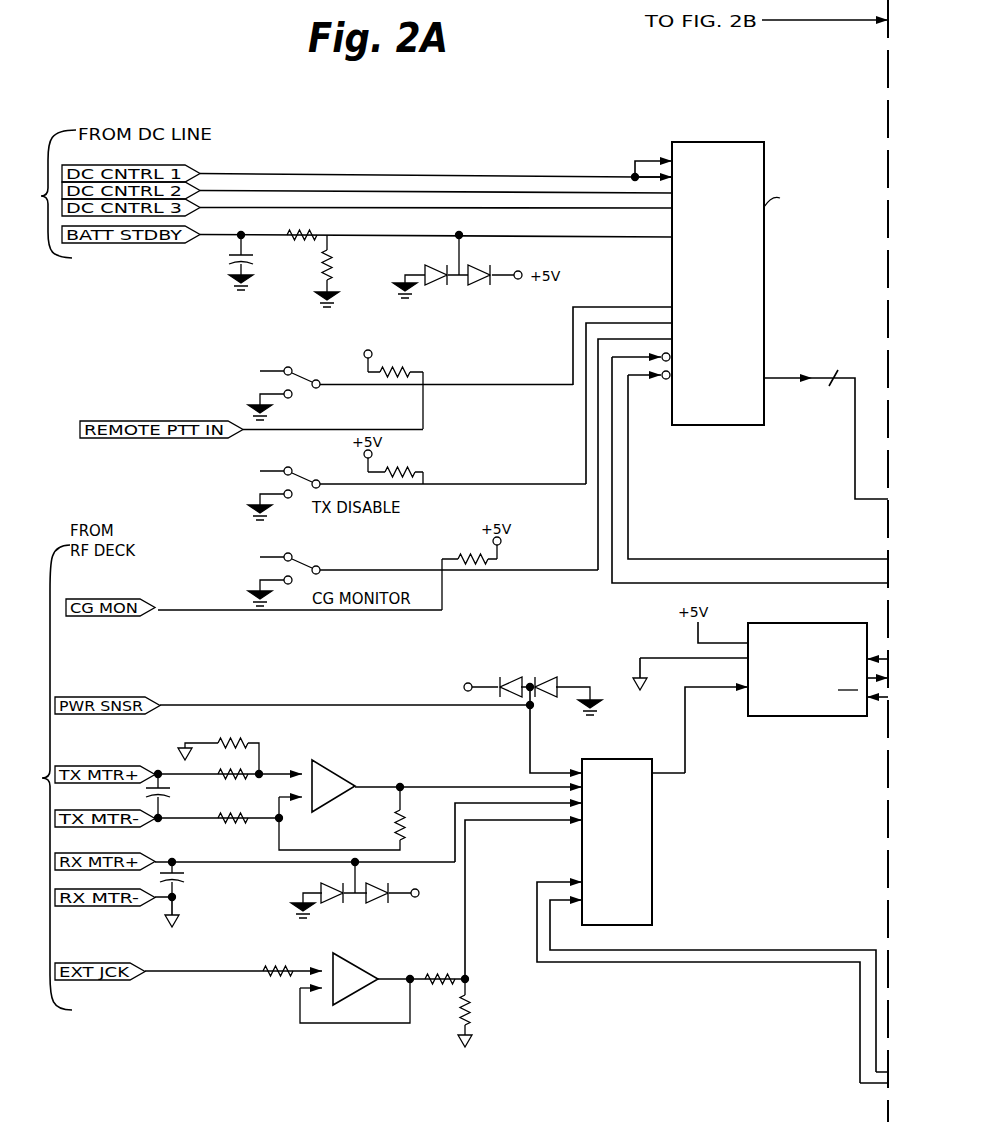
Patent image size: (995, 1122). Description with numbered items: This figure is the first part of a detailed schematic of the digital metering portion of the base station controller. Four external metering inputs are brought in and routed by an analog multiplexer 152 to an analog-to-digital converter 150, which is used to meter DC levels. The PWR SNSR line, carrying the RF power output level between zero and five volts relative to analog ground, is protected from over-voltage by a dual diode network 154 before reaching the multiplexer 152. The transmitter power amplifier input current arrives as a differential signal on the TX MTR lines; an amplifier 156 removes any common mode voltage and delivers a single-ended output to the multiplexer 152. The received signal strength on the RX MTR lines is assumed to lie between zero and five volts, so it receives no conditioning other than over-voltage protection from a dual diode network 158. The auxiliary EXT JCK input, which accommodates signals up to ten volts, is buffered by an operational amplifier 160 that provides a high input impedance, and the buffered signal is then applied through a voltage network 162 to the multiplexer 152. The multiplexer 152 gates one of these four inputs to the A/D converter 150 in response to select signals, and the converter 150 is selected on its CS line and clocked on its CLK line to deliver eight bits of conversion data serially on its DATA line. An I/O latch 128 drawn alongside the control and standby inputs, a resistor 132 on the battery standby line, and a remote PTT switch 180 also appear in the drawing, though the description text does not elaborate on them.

The I/O latch (74HC541) 128 is at (764, 291).
The battery standby pull-down resistor 132 is at (355, 280).
The analog-to-digital converter 150 is at (794, 623).
The analog multiplexer 152 is at (652, 843).
The dual diode network 154 is at (522, 669).
The amplifier 156 is at (348, 772).
The dual diode network 158 is at (340, 909).
The operational amplifier 160 is at (363, 970).
The voltage network 162 is at (478, 978).
The remote PTT switch 180 is at (236, 378).